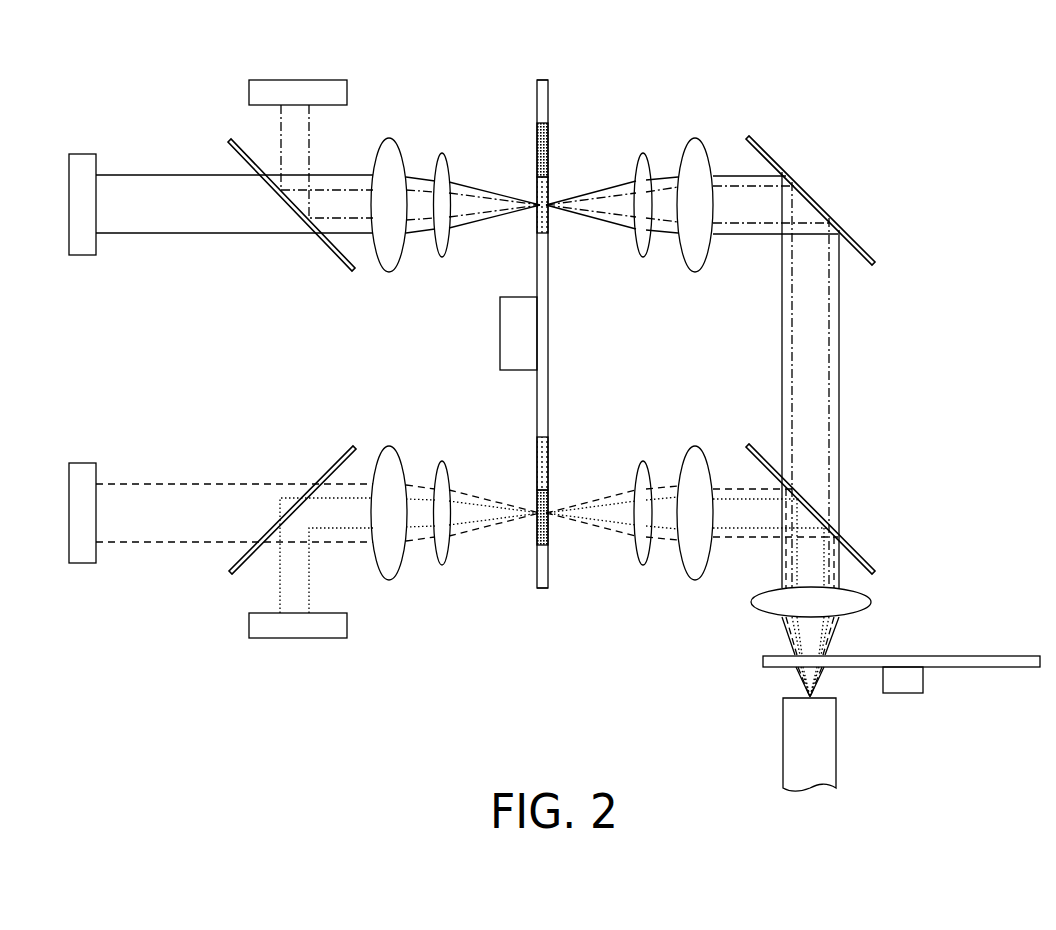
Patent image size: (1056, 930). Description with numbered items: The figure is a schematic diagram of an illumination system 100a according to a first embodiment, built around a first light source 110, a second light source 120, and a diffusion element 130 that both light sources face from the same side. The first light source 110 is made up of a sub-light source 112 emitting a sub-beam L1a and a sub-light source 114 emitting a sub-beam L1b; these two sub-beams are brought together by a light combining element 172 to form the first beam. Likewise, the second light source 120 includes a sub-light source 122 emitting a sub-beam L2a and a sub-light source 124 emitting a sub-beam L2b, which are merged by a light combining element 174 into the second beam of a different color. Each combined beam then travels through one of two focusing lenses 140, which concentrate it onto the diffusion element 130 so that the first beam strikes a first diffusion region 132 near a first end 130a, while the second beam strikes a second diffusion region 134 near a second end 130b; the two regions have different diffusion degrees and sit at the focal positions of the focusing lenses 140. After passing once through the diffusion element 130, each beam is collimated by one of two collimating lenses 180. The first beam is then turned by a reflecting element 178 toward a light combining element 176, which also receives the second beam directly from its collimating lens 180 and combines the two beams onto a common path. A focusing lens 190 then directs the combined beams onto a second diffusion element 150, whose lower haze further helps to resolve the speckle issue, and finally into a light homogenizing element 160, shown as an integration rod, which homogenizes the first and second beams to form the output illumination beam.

The illumination system 100a is at (988, 117).
The first light source 110 is at (190, 137).
The sub-light source 112 is at (81, 168).
The sub-light source 114 is at (254, 92).
The second light source 120 is at (195, 516).
The sub-light source 122 is at (80, 470).
The sub-light source 124 is at (268, 625).
The diffusion element 130 is at (578, 345).
The first end 130a is at (547, 63).
The second end 130b is at (544, 609).
The first diffusion region 132 is at (550, 195).
The second diffusion region 134 is at (550, 150).
The focusing lens 140 is at (372, 278).
The diffusion element 150 is at (1000, 655).
The light homogenizing element 160 is at (826, 755).
The light combining element 172 is at (345, 264).
The light combining element 174 is at (229, 574).
The light combining element 176 is at (874, 558).
The reflecting element 178 is at (874, 250).
The collimating lens 180 is at (635, 278).
The focusing lens 190 is at (868, 602).
The sub-beam L1a is at (168, 233).
The sub-beam L1b is at (309, 127).
The sub-beam L2a is at (203, 480).
The sub-beam L2b is at (309, 590).